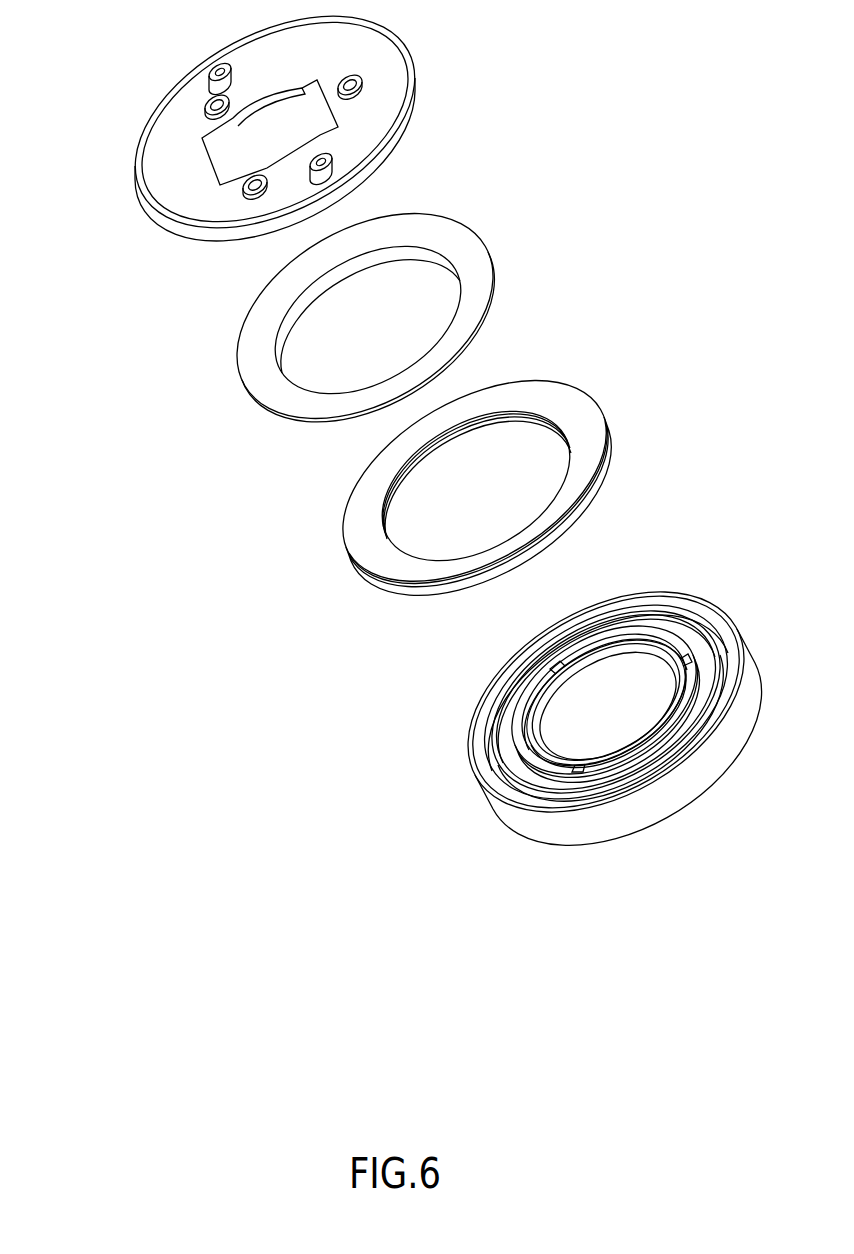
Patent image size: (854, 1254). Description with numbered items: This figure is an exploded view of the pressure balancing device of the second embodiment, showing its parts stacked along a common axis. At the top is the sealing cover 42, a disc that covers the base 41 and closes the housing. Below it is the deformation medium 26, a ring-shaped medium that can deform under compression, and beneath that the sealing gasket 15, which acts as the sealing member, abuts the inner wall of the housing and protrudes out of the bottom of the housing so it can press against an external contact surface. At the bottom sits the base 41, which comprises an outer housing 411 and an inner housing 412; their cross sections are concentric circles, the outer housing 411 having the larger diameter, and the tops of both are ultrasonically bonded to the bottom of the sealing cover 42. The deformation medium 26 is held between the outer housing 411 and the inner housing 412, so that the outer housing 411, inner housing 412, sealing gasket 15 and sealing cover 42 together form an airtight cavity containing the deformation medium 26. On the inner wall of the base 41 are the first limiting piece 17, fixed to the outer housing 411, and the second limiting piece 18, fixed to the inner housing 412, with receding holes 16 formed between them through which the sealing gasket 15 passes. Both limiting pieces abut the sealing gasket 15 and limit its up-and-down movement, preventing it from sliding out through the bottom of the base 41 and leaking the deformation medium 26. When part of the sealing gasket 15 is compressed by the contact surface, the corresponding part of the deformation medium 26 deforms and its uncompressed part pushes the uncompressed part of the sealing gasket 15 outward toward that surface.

The sealing cover 42 is at (190, 183).
The deformation medium 26 is at (308, 390).
The sealing gasket 15 is at (372, 543).
The first limiting piece 17 is at (492, 760).
The receding holes 16 is at (503, 795).
The second limiting piece 18 is at (532, 795).
The base 41 is at (606, 758).
The outer housing 411 is at (570, 830).
The inner housing 412 is at (605, 780).